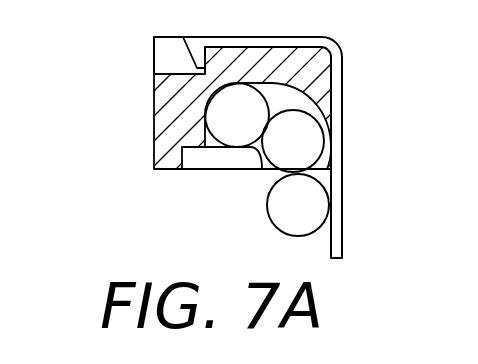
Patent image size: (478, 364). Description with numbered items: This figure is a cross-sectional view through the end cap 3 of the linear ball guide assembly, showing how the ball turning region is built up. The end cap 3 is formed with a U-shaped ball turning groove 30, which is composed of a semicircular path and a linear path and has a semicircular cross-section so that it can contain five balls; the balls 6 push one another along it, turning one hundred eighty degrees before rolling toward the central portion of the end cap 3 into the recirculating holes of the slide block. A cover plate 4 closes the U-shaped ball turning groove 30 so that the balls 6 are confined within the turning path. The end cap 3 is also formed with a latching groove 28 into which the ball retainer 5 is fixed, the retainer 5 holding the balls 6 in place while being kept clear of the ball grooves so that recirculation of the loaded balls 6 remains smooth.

The latching groove 28 is at (168, 55).
The end cap 3 is at (163, 122).
The cover plate 4 is at (212, 160).
The U-shaped ball turning groove 30 is at (275, 100).
The ball retainer 5 is at (333, 190).
The ball 6 is at (290, 220).